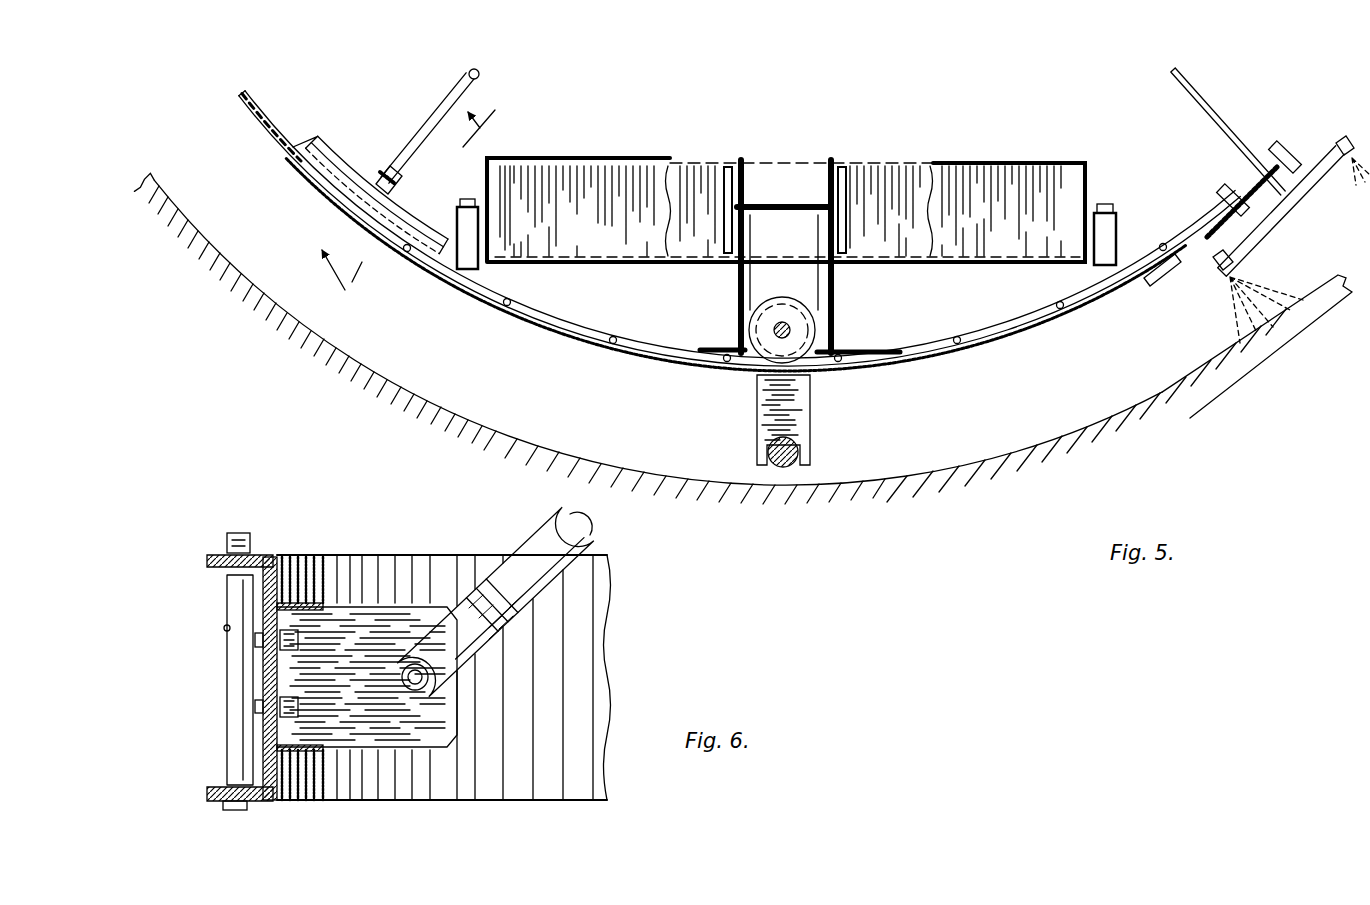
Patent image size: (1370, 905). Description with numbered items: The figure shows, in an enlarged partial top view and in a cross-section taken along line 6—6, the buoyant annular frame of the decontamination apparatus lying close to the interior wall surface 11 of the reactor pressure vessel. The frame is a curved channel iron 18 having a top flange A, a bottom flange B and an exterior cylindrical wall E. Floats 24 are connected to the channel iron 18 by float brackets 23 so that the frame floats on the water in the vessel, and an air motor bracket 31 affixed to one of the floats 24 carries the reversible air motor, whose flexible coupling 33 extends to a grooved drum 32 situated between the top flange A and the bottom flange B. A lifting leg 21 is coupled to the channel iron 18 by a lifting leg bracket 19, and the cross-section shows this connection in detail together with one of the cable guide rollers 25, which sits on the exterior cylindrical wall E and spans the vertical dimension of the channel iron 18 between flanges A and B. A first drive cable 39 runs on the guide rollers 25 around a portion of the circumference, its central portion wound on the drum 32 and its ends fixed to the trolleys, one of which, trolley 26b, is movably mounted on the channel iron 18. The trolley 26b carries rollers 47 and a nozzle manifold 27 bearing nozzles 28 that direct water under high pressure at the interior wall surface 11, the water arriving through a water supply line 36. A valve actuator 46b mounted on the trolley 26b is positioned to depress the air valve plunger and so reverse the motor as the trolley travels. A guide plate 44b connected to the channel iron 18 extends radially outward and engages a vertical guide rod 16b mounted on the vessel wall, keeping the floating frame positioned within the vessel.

In FIG. 5, the interior wall surface 11 is at (483, 418).
In FIG. 5, the curved channel iron 18 is at (680, 343).
In FIG. 6, the curved channel iron 18 is at (577, 683).
In FIG. 5, the lifting leg bracket 19 is at (347, 167).
In FIG. 6, the lifting leg bracket 19 is at (440, 730).
In FIG. 5, the lifting leg 21 is at (437, 117).
In FIG. 6, the lifting leg 21 is at (598, 535).
In FIG. 5, the float bracket 23 is at (457, 228).
In FIG. 5, the float 24 is at (907, 165).
In FIG. 5, the cable guide roller 25 is at (603, 337).
In FIG. 6, the cable guide roller 25 is at (232, 724).
In FIG. 5, the trolley 26b is at (1225, 205).
In FIG. 5, the nozzle manifold 27 is at (1263, 230).
In FIG. 5, the nozzle 28 is at (1220, 277).
In FIG. 5, the air motor bracket 31 is at (790, 207).
In FIG. 5, the grooved drum 32 is at (813, 337).
In FIG. 5, the flexible coupling 33 is at (786, 322).
In FIG. 5, the water supply line 36 is at (1202, 92).
In FIG. 5, the first drive cable 39 is at (650, 357).
In FIG. 6, the first drive cable 39 is at (224, 628).
In FIG. 5, the guide plate 44b is at (800, 413).
In FIG. 5, the valve actuator 46b is at (1165, 272).
In FIG. 5, the roller 47 is at (1218, 205).
In FIG. 5, the vertical guide rod 16b is at (797, 473).
In FIG. 5, the top flange A is at (272, 108).
In FIG. 6, the top flange A is at (388, 553).
In FIG. 5, the bottom flange B is at (562, 338).
In FIG. 6, the bottom flange B is at (337, 806).
In FIG. 5, the exterior cylindrical wall E is at (673, 367).
In FIG. 6, the exterior cylindrical wall E is at (255, 757).
In FIG. 5, the section line 6 is at (400, 186).